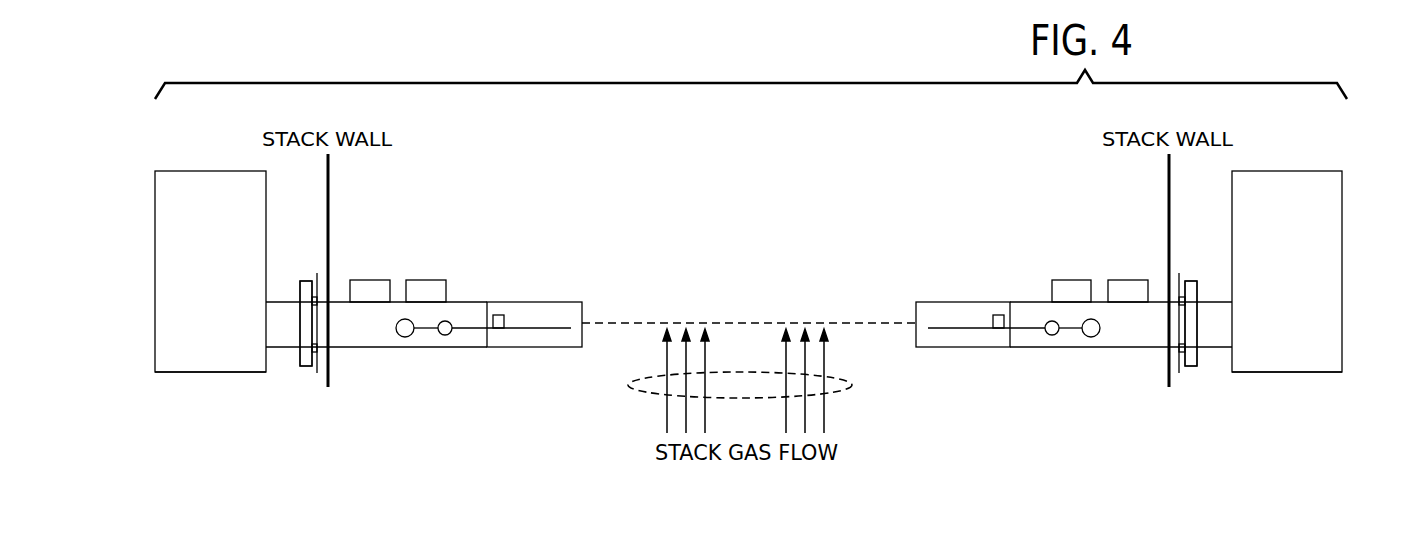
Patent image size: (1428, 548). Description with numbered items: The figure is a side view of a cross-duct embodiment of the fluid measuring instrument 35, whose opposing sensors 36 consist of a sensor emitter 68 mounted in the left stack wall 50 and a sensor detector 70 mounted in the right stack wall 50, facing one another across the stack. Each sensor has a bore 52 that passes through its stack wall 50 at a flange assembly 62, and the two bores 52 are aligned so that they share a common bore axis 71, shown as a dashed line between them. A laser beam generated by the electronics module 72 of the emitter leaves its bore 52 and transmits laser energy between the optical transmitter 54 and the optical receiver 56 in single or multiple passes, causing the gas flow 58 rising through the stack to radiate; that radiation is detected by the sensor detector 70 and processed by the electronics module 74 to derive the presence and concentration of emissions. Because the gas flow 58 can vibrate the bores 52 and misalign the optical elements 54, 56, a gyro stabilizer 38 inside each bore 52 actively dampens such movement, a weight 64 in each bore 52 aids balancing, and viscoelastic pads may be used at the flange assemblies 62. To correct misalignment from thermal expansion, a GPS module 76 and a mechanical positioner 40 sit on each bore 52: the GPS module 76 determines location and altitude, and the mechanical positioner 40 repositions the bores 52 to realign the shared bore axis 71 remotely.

The fluid measuring instrument 35 is at (1260, 125).
The sensors 36 is at (280, 409).
The gyro stabilizer 38 is at (398, 337).
The mechanical positioner 40 is at (427, 280).
The stack wall 50 is at (329, 203).
The bore 52 is at (575, 302).
The optical transmitter 54 is at (499, 314).
The optical receiver 56 is at (998, 314).
The gas flow 58 is at (853, 385).
The flange assembly 62 is at (323, 273).
The weight 64 is at (449, 335).
The sensor emitter 68 is at (210, 148).
The sensor detector 70 is at (1340, 158).
The bore axis 71 is at (666, 322).
The electronics module 72 is at (210, 373).
The electronics module 74 is at (1287, 373).
The GPS module 76 is at (373, 280).